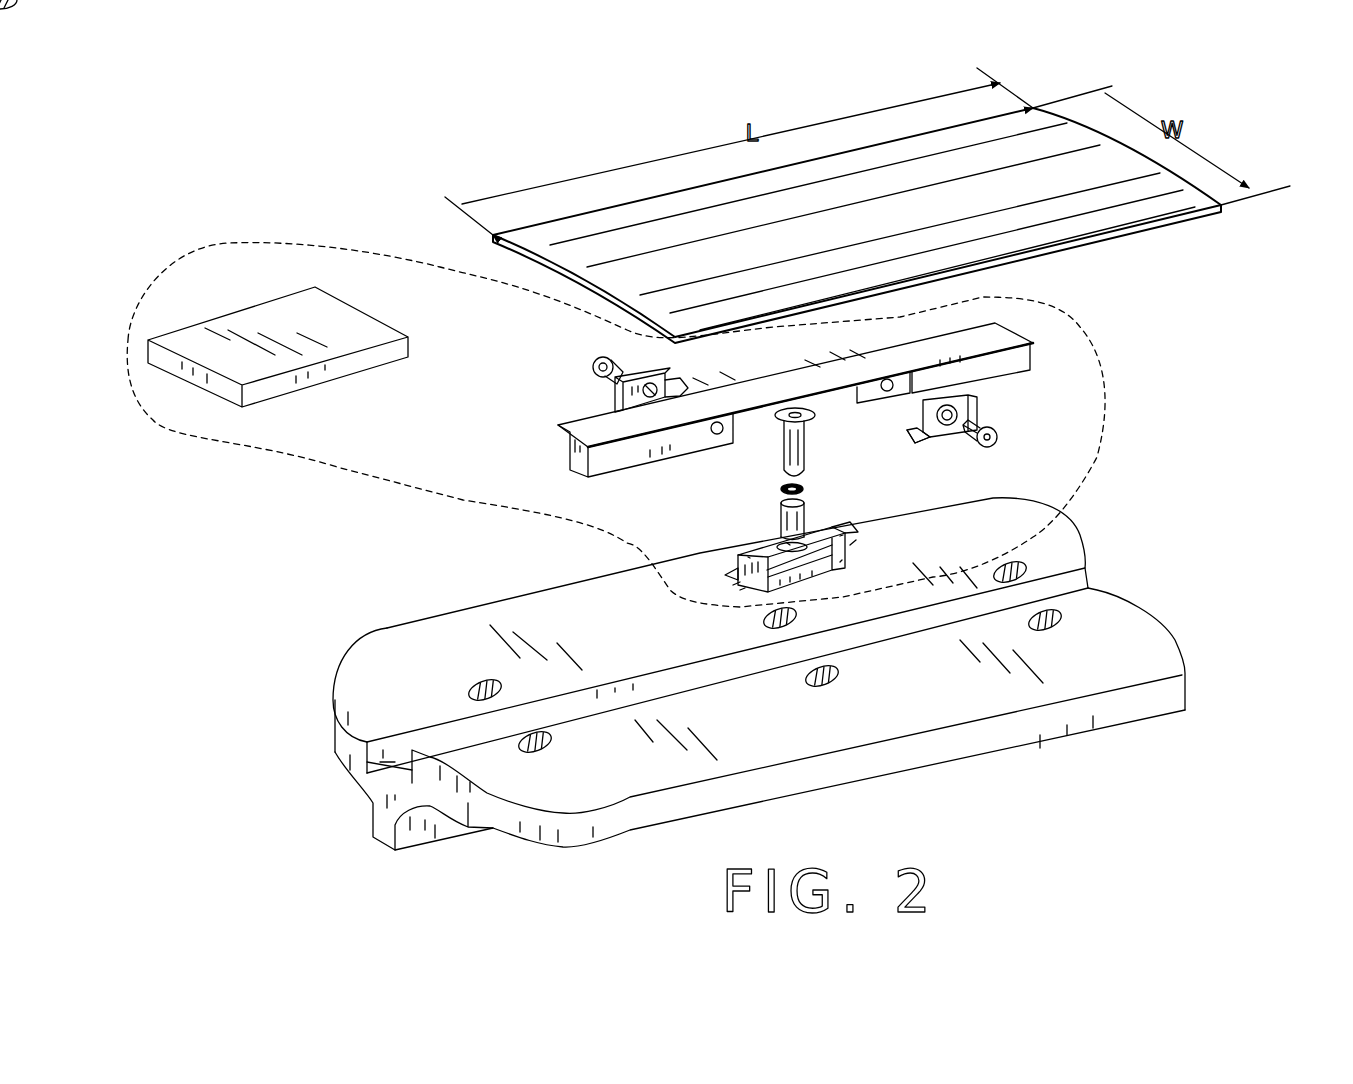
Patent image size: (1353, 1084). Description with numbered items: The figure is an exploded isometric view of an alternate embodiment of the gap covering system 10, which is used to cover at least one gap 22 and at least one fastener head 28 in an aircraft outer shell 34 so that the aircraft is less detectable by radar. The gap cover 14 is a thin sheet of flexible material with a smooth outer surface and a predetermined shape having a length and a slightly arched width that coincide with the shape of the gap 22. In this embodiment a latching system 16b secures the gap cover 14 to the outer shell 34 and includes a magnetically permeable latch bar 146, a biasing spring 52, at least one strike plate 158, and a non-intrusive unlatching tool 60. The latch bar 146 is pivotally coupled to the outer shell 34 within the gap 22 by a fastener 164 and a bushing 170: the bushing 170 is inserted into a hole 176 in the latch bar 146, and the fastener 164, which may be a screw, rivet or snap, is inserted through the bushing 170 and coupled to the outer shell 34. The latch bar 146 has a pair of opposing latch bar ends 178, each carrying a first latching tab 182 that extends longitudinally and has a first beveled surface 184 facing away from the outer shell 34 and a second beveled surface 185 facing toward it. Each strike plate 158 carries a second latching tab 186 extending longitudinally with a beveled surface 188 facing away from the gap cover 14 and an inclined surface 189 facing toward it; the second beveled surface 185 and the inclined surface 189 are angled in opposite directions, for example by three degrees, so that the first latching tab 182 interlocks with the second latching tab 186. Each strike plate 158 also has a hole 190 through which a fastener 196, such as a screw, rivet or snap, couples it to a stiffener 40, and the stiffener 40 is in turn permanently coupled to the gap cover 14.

The gap covering system 10 is at (1150, 329).
The gap cover 14 is at (1080, 248).
The latching system 16b is at (337, 467).
The gap 22 is at (393, 762).
The fastener head 28 is at (1025, 566).
The aircraft outer shell 34 is at (962, 760).
The stiffener 40 is at (570, 447).
The biasing spring 52 is at (803, 487).
The non-intrusive unlatching tool 60 is at (363, 370).
The latch bar 146 is at (828, 577).
The strike plate 158 is at (613, 393).
The fastener 164 is at (783, 453).
The bushing 170 is at (806, 515).
The hole 176 is at (787, 543).
The latch bar end 178 is at (748, 557).
The first latching tab 182 is at (743, 592).
The first beveled surface 184 is at (727, 575).
The second beveled surface 185 is at (735, 583).
The second latching tab 186 is at (695, 388).
The beveled surface 188 is at (910, 435).
The inclined surface 189 is at (673, 392).
The hole 190 is at (652, 383).
The fastener 196 is at (603, 360).